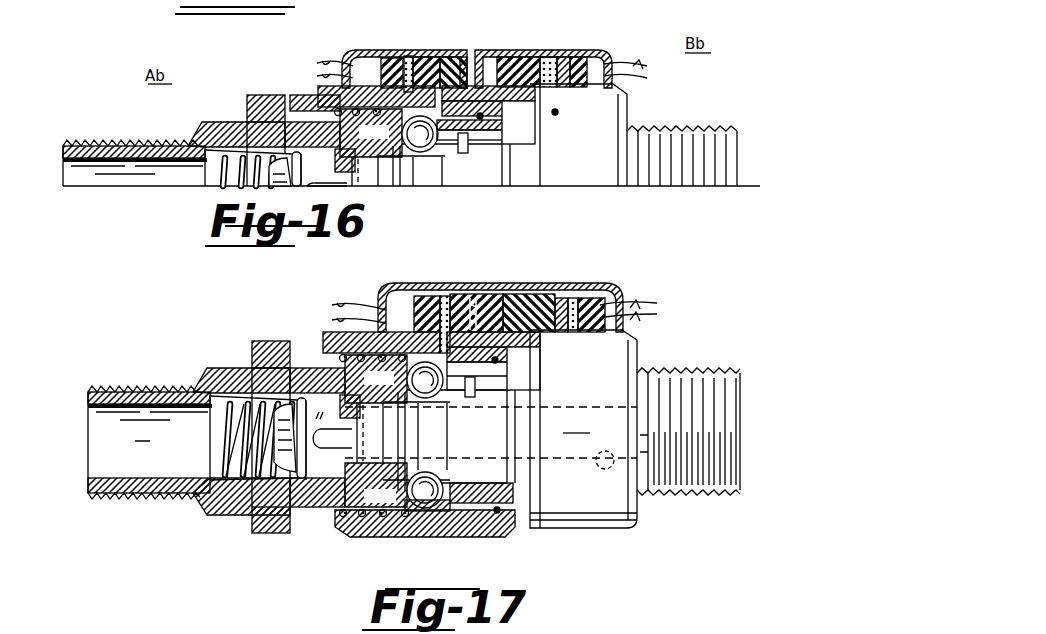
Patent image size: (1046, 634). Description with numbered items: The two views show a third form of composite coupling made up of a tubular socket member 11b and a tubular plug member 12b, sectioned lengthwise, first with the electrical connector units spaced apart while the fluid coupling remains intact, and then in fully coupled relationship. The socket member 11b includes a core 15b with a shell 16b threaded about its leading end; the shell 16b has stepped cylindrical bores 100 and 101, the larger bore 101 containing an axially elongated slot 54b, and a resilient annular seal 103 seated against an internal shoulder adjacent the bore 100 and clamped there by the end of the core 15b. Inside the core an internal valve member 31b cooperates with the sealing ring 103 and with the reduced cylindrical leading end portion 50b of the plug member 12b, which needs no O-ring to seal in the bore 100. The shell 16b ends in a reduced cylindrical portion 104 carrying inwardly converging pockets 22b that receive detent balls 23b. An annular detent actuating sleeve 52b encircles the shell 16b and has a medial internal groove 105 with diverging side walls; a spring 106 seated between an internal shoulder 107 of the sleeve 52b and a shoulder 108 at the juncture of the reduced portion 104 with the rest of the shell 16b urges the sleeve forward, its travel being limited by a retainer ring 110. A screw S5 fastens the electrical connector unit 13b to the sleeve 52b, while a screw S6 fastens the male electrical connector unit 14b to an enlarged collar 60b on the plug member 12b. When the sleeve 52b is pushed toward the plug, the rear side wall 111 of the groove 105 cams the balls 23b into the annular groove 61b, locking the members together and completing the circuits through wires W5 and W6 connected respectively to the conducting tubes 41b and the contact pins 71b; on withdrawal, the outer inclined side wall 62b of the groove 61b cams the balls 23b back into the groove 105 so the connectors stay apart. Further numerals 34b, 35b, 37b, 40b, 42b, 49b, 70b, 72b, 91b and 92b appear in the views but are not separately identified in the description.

In FIG. 17, the socket member 11b is at (128, 384).
In FIG. 16, the socket member 11b is at (135, 143).
In FIG. 17, the plug member 12b is at (705, 368).
In FIG. 16, the plug member 12b is at (682, 143).
In FIG. 16, the electrical connector unit 13b is at (384, 23).
In FIG. 17, the male electrical connector unit 14b is at (620, 279).
In FIG. 17, the core 15b is at (212, 366).
In FIG. 16, the core 15b is at (221, 126).
In FIG. 17, the shell 16b is at (270, 339).
In FIG. 16, the shell 16b is at (246, 126).
In FIG. 17, the inwardly converging pockets 22b is at (481, 493).
In FIG. 16, the inwardly converging pockets 22b is at (376, 96).
In FIG. 17, the detent balls 23b is at (434, 478).
In FIG. 16, the detent balls 23b is at (426, 120).
In FIG. 17, the internal valve member 31b is at (290, 403).
In FIG. 16, the internal valve member 31b is at (255, 185).
In FIG. 17, the spring 34b is at (228, 414).
In FIG. 16, the spring 34b is at (226, 184).
In FIG. 17, the valve disc 35b is at (300, 480).
In FIG. 16, the valve disc 35b is at (293, 182).
In FIG. 16, the shoulder 37b is at (490, 168).
In FIG. 17, the seal ring 40b is at (498, 292).
In FIG. 16, the seal ring 40b is at (453, 50).
In FIG. 16, the conducting tubes 41b is at (400, 55).
In FIG. 17, the seal element 42b is at (426, 296).
In FIG. 16, the seal element 42b is at (426, 44).
In FIG. 17, the hexagonal portion 49b is at (606, 469).
In FIG. 17, the reduced cylindrical leading end portion 50b is at (376, 485).
In FIG. 16, the reduced cylindrical leading end portion 50b is at (383, 210).
In FIG. 17, the detent actuating sleeve 52b is at (342, 334).
In FIG. 16, the detent actuating sleeve 52b is at (298, 80).
In FIG. 16, the axially elongated slot 54b is at (504, 131).
In FIG. 17, the enlarged collar 60b is at (624, 352).
In FIG. 16, the enlarged collar 60b is at (585, 135).
In FIG. 17, the annular groove 61b is at (425, 447).
In FIG. 16, the annular groove 61b is at (452, 182).
In FIG. 17, the outer inclined side wall 62b is at (410, 425).
In FIG. 16, the outer inclined side wall 62b is at (428, 169).
In FIG. 17, the seal ring 70b is at (519, 293).
In FIG. 16, the seal ring 70b is at (543, 50).
In FIG. 17, the contact pins 71b is at (540, 296).
In FIG. 16, the contact pins 71b is at (610, 59).
In FIG. 17, the seal ring 72b is at (592, 288).
In FIG. 16, the seal ring 72b is at (613, 54).
In FIG. 17, the valve stem 91b is at (350, 427).
In FIG. 16, the valve stem 91b is at (324, 170).
In FIG. 17, the stem guide 92b is at (371, 433).
In FIG. 16, the stem guide 92b is at (355, 185).
In FIG. 17, the cylindrical bore 100 is at (376, 379).
In FIG. 16, the cylindrical bore 100 is at (371, 133).
In FIG. 17, the cylindrical bore 101 is at (492, 390).
In FIG. 16, the cylindrical bore 101 is at (488, 148).
In FIG. 17, the resilient annular seal 103 is at (337, 402).
In FIG. 16, the resilient annular seal 103 is at (330, 160).
In FIG. 16, the reduced cylindrical portion 104 is at (524, 115).
In FIG. 17, the annular internal groove 105 is at (505, 352).
In FIG. 16, the annular internal groove 105 is at (488, 115).
In FIG. 17, the spring 106 is at (372, 537).
In FIG. 16, the spring 106 is at (343, 104).
In FIG. 17, the internal shoulder 107 is at (406, 340).
In FIG. 17, the shoulder 108 is at (327, 368).
In FIG. 16, the shoulder 108 is at (312, 134).
In FIG. 17, the retainer ring 110 is at (497, 361).
In FIG. 16, the retainer ring 110 is at (577, 104).
In FIG. 17, the rear side wall 111 is at (445, 294).
In FIG. 17, the screw S5 is at (470, 294).
In FIG. 16, the screw S5 is at (412, 53).
In FIG. 17, the screw S6 is at (572, 296).
In FIG. 16, the screw S6 is at (563, 54).
In FIG. 17, the wires W5 is at (362, 292).
In FIG. 16, the wires W5 is at (325, 64).
In FIG. 17, the wires W6 is at (641, 309).
In FIG. 16, the wires W6 is at (630, 63).